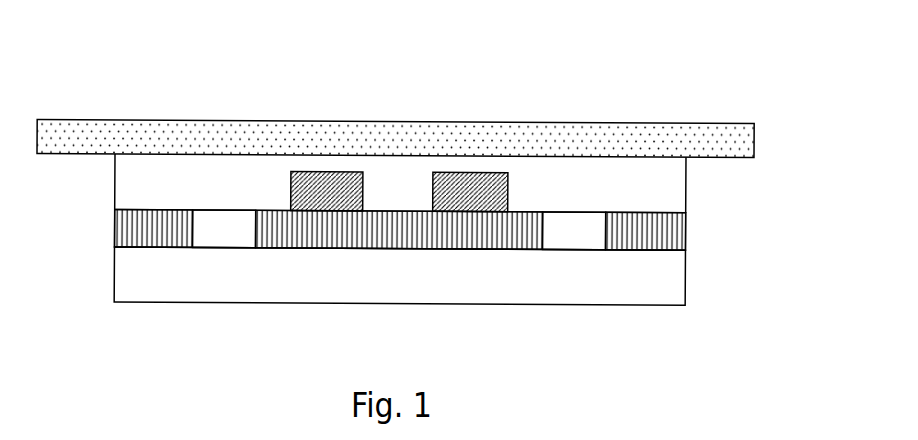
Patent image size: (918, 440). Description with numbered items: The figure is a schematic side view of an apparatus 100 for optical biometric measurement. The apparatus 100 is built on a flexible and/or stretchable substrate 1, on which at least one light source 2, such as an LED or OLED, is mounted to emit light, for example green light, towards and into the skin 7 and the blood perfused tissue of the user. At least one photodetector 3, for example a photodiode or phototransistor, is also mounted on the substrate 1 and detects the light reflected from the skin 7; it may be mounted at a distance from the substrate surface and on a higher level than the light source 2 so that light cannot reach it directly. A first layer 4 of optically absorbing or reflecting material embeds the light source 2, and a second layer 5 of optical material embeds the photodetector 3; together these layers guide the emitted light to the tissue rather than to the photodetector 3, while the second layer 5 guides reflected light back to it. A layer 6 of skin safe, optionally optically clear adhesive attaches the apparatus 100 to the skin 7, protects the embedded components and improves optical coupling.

The apparatus 100 is at (93, 46).
The substrate 1 is at (152, 293).
The light source 2 is at (228, 233).
The photodetector 3 is at (397, 185).
The first layer 4 is at (668, 235).
The second layer 5 is at (310, 187).
The layer of adhesive 6 is at (130, 179).
The skin 7 is at (530, 132).